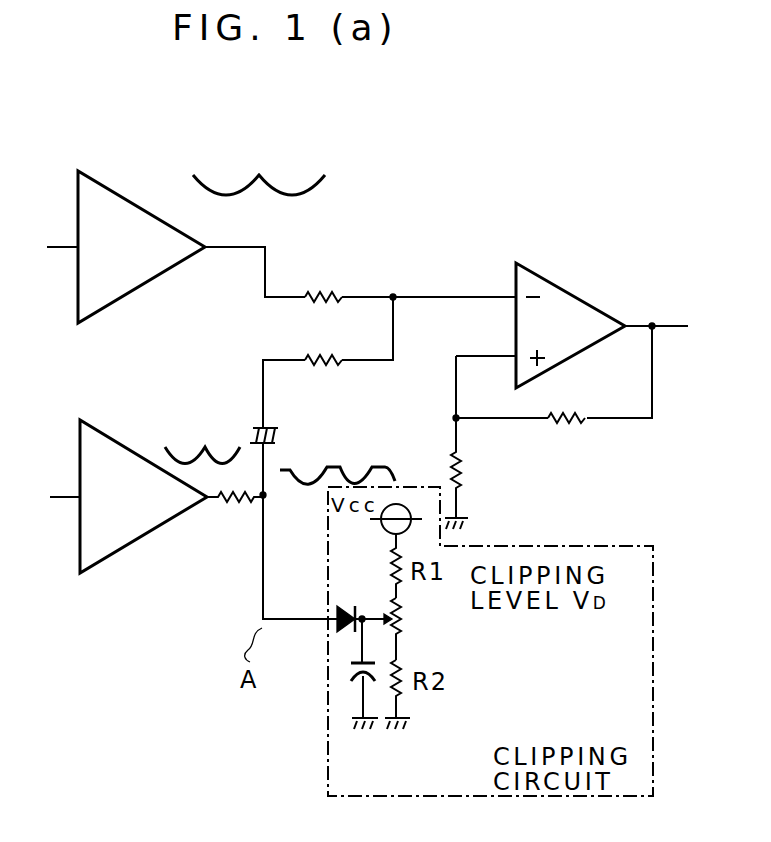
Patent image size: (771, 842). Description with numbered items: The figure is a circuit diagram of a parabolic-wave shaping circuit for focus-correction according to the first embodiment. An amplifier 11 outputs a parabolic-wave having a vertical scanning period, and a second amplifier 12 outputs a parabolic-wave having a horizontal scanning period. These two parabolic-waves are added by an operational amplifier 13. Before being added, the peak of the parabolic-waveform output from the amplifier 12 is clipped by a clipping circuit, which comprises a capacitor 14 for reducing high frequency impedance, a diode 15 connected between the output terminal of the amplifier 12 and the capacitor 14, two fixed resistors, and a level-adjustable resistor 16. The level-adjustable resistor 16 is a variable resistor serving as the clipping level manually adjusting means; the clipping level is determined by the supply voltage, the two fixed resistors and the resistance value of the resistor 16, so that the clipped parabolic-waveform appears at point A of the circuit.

The amplifier 11 is at (78, 265).
The amplifier 12 is at (80, 522).
The operational amplifier 13 is at (588, 300).
The capacitor 14 is at (373, 681).
The diode 15 is at (343, 605).
The level-adjustable resistor 16 is at (410, 612).